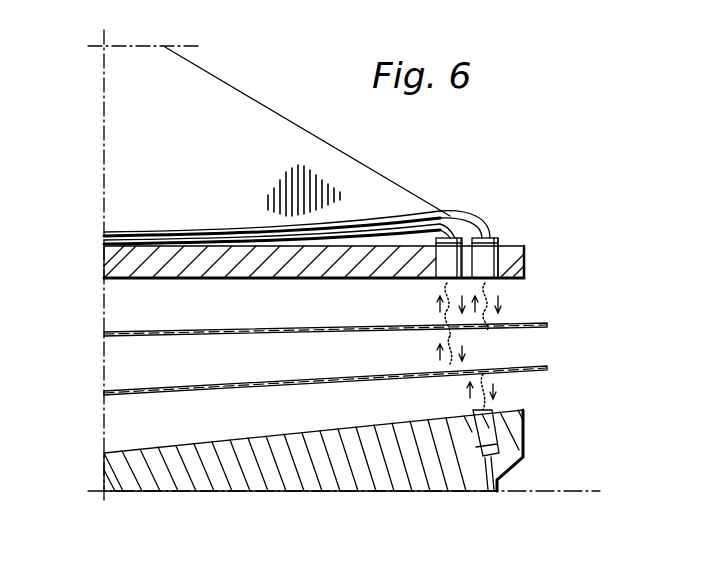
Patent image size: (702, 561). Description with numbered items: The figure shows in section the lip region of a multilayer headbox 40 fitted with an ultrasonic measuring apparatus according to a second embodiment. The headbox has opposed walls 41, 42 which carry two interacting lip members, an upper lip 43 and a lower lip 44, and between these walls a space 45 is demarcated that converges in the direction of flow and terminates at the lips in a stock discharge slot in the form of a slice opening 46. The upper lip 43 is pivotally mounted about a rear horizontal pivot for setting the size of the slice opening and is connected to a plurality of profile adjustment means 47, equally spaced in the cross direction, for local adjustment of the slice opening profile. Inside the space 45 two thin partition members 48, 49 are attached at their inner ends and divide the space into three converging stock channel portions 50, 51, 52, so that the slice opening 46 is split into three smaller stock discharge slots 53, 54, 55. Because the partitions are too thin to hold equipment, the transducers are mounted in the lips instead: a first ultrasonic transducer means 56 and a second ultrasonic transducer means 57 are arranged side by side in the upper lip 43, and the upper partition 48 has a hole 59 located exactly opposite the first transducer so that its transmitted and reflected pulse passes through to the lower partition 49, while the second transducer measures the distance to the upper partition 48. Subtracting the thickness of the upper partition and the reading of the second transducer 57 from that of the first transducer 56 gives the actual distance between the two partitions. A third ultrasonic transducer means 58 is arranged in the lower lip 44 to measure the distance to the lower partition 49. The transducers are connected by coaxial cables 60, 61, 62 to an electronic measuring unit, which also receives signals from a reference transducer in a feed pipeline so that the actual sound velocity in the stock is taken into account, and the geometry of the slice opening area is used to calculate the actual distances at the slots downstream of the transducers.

The multilayer headbox 40 is at (290, 488).
The wall 41 is at (106, 266).
The wall 42 is at (108, 466).
The upper lip 43 is at (527, 264).
The lower lip 44 is at (528, 422).
The space 45 is at (108, 300).
The slice opening 46 is at (527, 299).
The profile adjustment means 47 is at (267, 125).
The upper thin partition member 48 is at (547, 326).
The lower thin partition member 49 is at (547, 370).
The stock channel portion 50 is at (108, 313).
The stock channel portion 51 is at (108, 364).
The stock channel portion 52 is at (108, 420).
The stock discharge slot 53 is at (528, 305).
The stock discharge slot 54 is at (533, 345).
The stock discharge slot 55 is at (528, 392).
The first ultrasonic transducer means 56 is at (428, 268).
The second ultrasonic transducer means 57 is at (500, 234).
The third ultrasonic transducer means 58 is at (522, 446).
The hole 59 is at (445, 326).
The coaxial cable 60 is at (433, 213).
The coaxial cable 61 is at (468, 218).
The coaxial cable 62 is at (500, 482).